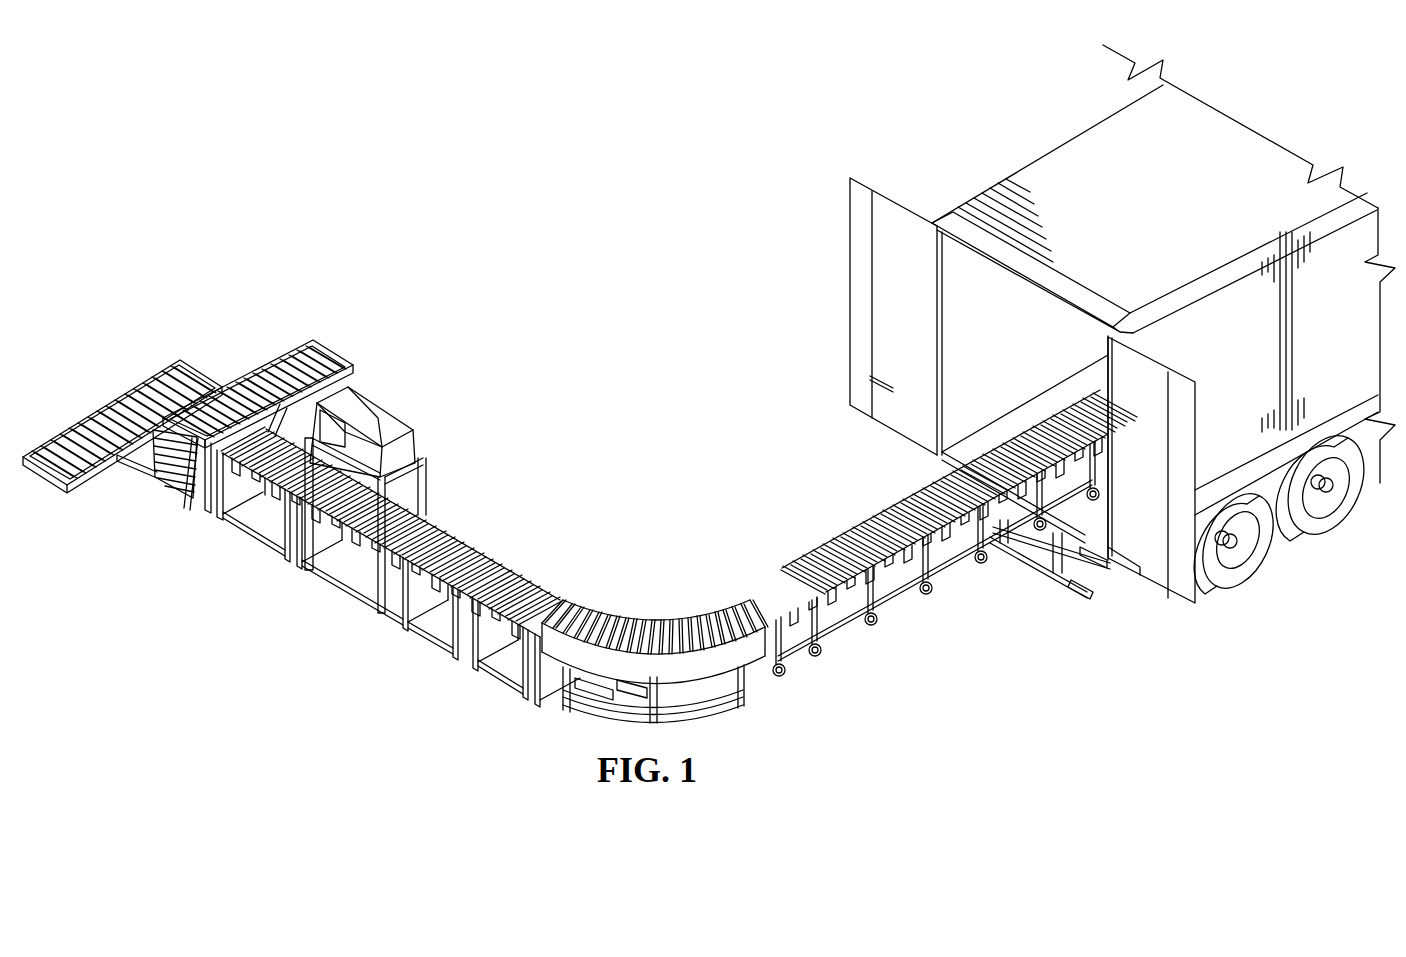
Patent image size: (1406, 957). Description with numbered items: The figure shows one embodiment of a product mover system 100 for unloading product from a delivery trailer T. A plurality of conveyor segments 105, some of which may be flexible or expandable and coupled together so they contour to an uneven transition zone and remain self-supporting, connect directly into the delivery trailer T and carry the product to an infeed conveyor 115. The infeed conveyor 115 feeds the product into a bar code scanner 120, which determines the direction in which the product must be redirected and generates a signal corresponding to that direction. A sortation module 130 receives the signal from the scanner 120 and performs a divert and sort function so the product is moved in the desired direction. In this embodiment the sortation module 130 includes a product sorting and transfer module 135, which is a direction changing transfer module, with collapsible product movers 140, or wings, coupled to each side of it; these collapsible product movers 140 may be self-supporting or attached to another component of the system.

The product mover system 100 is at (670, 208).
The conveyor segments 105 is at (770, 569).
The infeed conveyor 115 is at (534, 568).
The bar code scanner 120 is at (406, 404).
The sortation module 130 is at (280, 293).
The product sorting and transfer module 135 is at (144, 372).
The collapsible product movers 140 is at (318, 344).
The delivery trailer T is at (1055, 140).